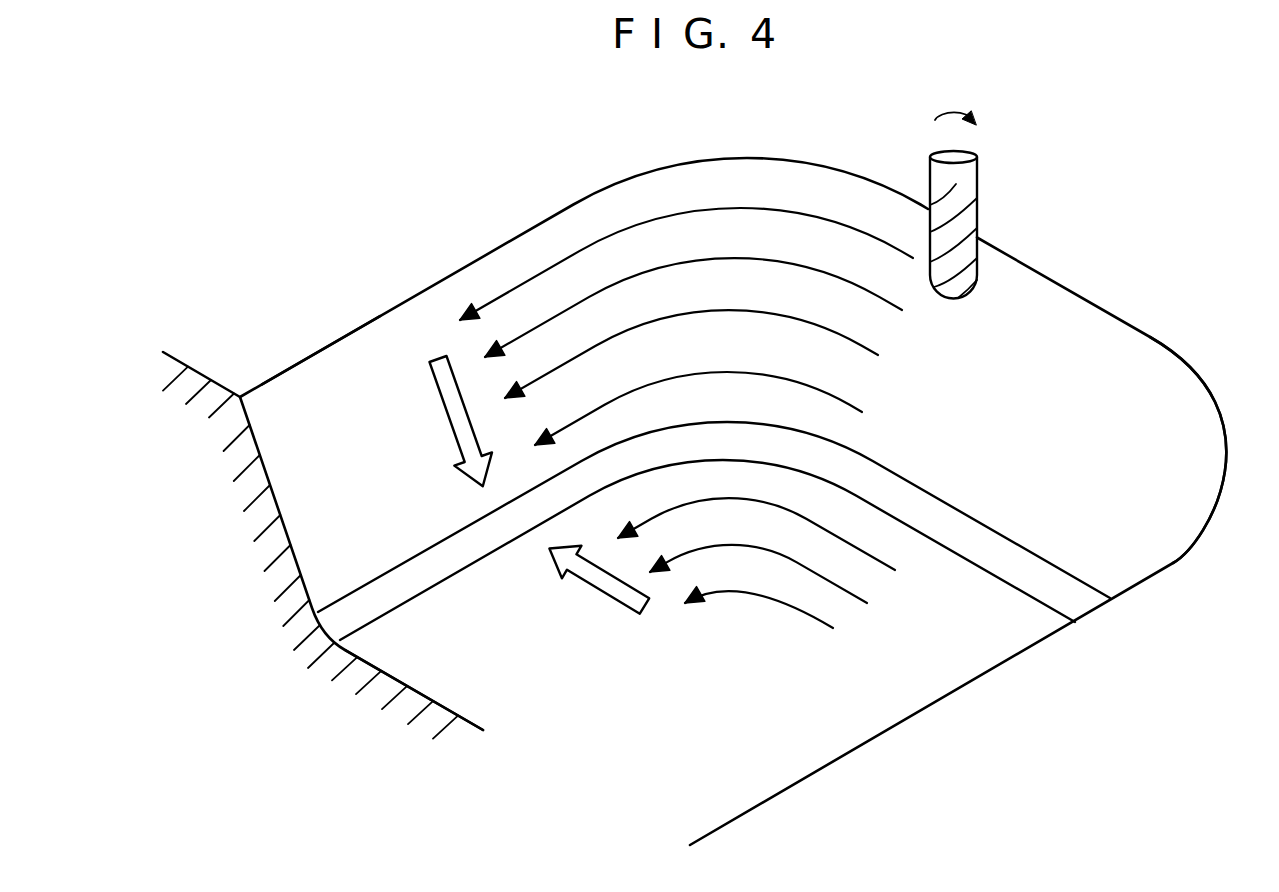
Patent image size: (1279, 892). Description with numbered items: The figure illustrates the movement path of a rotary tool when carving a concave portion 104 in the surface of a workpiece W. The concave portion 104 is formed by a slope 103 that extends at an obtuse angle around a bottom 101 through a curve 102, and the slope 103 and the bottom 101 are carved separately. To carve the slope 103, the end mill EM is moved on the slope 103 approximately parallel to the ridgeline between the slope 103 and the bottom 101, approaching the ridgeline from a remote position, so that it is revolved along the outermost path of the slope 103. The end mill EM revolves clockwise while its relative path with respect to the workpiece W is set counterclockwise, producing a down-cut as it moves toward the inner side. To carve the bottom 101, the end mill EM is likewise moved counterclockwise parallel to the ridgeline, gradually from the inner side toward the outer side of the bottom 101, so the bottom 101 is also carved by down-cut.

The workpiece W is at (694, 485).
The end mill EM is at (986, 164).
The bottom 101 is at (478, 694).
The curve 102 is at (352, 610).
The slope 103 is at (320, 378).
The concave portion 104 is at (1133, 353).